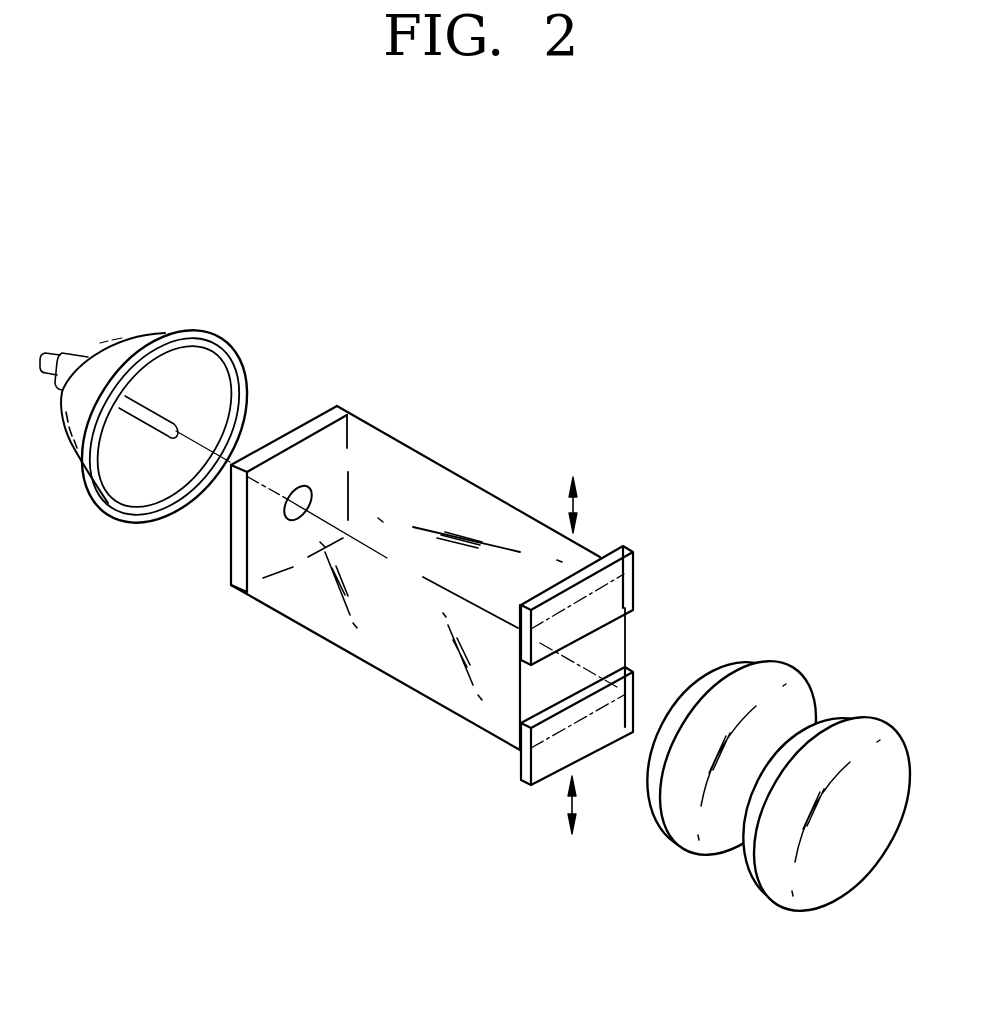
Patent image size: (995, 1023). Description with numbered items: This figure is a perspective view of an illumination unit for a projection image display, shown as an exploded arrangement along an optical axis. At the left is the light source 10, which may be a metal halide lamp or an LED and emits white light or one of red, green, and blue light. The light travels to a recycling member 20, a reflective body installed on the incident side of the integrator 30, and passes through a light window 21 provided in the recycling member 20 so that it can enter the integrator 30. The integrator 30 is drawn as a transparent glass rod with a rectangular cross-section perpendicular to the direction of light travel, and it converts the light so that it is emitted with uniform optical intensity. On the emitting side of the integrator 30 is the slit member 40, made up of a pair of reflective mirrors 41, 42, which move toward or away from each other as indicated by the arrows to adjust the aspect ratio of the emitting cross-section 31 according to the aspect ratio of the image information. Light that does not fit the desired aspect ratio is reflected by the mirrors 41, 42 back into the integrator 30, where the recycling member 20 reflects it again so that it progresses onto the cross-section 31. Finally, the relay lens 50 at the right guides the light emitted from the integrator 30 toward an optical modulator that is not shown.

The light source 10 is at (112, 336).
The recycling member 20 is at (337, 404).
The light window 21 is at (290, 513).
The integrator 30 is at (494, 511).
The cross-section 31 is at (540, 700).
The slit member 40 is at (722, 572).
The reflective mirror 41 is at (637, 580).
The reflective mirror 42 is at (633, 693).
The relay lens 50 is at (815, 647).